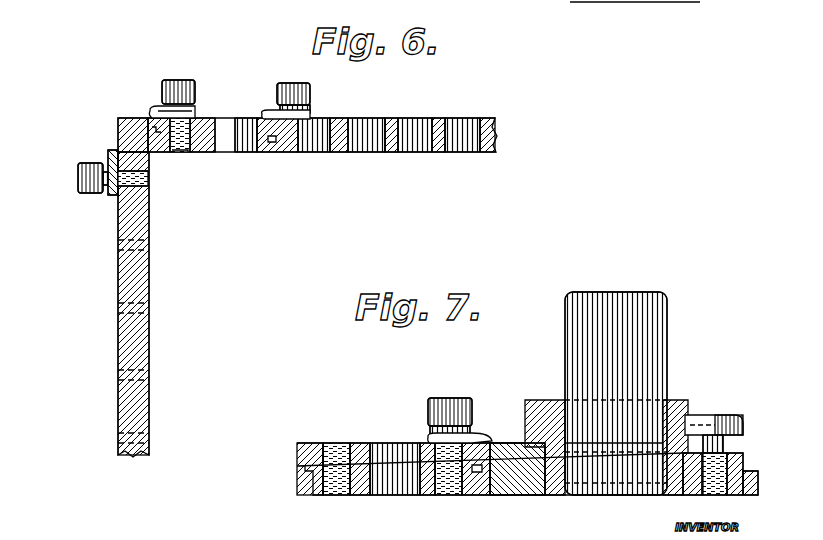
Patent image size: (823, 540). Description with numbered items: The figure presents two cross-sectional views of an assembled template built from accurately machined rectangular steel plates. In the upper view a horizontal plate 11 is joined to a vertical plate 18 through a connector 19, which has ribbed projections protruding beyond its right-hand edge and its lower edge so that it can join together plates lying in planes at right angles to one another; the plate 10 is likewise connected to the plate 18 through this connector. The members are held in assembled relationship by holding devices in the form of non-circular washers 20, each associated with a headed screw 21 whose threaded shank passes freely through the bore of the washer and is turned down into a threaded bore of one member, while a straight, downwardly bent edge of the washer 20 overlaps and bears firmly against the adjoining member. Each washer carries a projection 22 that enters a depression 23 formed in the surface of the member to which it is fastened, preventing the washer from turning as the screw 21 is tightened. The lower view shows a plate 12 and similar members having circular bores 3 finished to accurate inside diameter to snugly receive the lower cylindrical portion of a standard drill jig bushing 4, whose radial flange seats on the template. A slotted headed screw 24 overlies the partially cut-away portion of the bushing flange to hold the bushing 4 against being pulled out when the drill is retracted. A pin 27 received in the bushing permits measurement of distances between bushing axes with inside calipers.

In FIG. 7, the circular bore 3 is at (386, 472).
In FIG. 7, the drill jig bushing 4 is at (550, 410).
In FIG. 6, the rectangular plate 10 is at (262, 153).
In FIG. 6, the rectangular plate 11 is at (393, 126).
In FIG. 7, the rectangular plate 11 is at (363, 433).
In FIG. 7, the rectangular plate 12 is at (526, 478).
In FIG. 6, the rectangular plate 18 is at (149, 277).
In FIG. 6, the connector 19 is at (118, 123).
In FIG. 6, the washer 20 is at (165, 112).
In FIG. 6, the headed screw 21 is at (178, 86).
In FIG. 6, the projection 22 is at (192, 119).
In FIG. 6, the depression 23 is at (192, 154).
In FIG. 7, the slotted headed screw 24 is at (707, 418).
In FIG. 7, the pin 27 is at (643, 338).